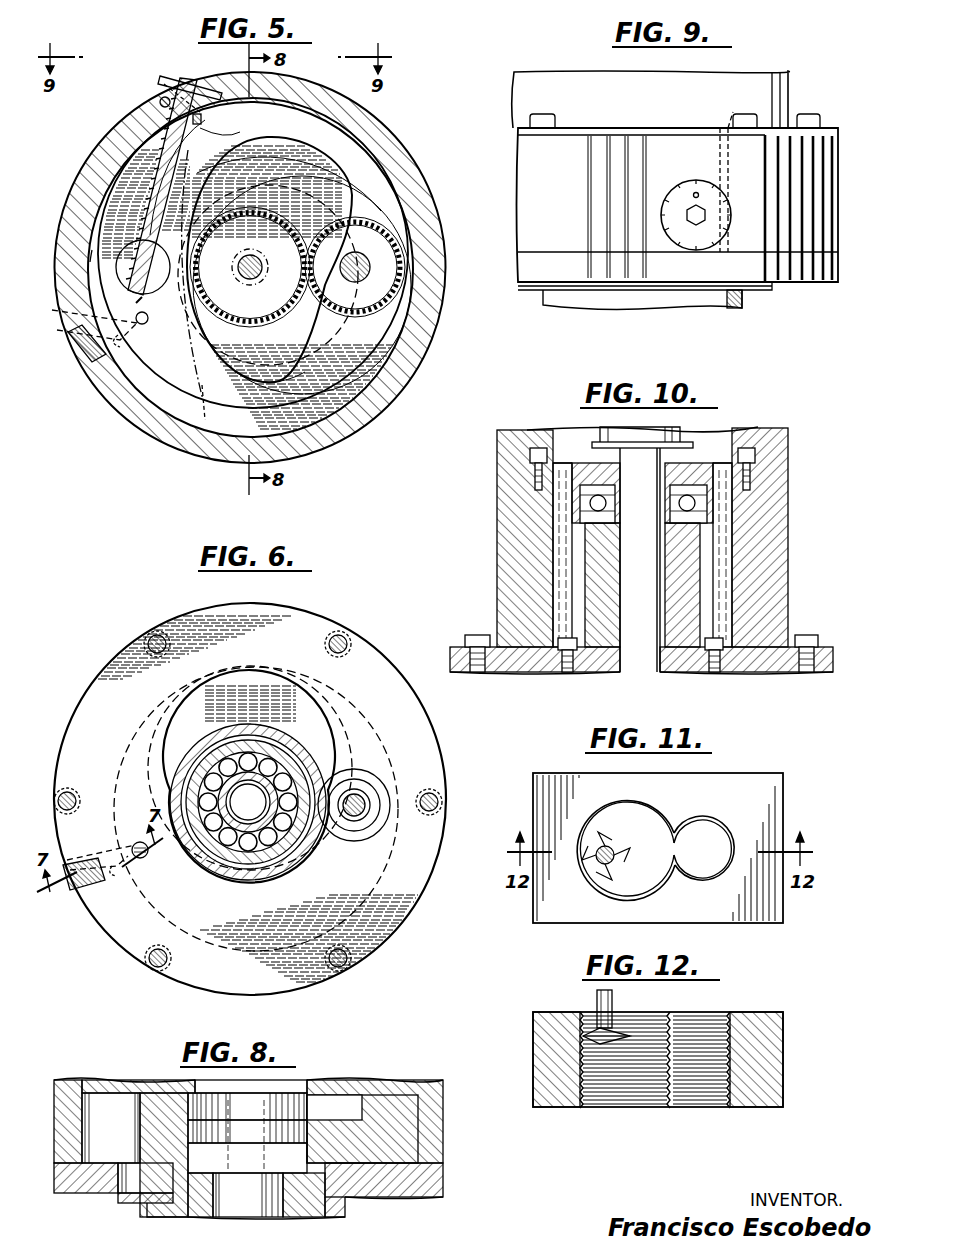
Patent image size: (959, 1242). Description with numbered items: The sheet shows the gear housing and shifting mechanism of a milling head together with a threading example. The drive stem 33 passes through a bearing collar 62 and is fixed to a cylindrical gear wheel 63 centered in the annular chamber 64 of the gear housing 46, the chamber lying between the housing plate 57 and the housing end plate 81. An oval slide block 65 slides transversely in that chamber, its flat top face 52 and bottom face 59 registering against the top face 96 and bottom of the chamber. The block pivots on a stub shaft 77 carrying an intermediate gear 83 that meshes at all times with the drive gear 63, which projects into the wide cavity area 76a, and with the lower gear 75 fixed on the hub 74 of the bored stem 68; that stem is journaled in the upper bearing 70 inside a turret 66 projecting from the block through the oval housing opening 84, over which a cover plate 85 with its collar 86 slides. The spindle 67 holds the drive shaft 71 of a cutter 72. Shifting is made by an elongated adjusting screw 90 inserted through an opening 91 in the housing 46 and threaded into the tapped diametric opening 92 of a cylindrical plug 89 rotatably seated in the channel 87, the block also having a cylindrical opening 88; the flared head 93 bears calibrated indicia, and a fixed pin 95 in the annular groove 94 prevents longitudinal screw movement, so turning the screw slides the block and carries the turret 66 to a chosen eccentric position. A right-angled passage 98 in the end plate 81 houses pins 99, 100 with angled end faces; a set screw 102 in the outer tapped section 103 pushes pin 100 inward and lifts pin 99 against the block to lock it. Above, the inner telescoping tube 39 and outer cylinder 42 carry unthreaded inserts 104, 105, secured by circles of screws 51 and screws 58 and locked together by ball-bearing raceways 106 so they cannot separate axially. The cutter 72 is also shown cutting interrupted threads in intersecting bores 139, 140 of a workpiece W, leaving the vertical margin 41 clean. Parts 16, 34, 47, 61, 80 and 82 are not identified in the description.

In FIG. 5, the rotor chamber 16 is at (312, 364).
In FIG. 5, the drive stem 33 is at (262, 268).
In FIG. 10, the drive stem 33 is at (650, 479).
In FIG. 10, the shaft flange 34 is at (618, 432).
In FIG. 10, the inner telescoping tube 39 is at (760, 428).
In FIG. 11, the vertical margin 41 is at (670, 845).
In FIG. 12, the vertical margin 41 is at (672, 1012).
In FIG. 9, the outer cylinder 42 is at (644, 103).
In FIG. 10, the outer cylinder 42 is at (788, 510).
In FIG. 5, the gear housing 46 is at (382, 404).
In FIG. 8, the gear housing 46 is at (60, 1100).
In FIG. 9, the gear housing 46 is at (560, 203).
In FIG. 10, the gear housing 46 is at (452, 655).
In FIG. 9, the bolt 47 is at (550, 113).
In FIG. 10, the bolt 47 is at (472, 636).
In FIG. 10, the screws 51 is at (550, 449).
In FIG. 5, the flat top face 52 is at (341, 196).
In FIG. 8, the flat top face 52 is at (162, 1080).
In FIG. 10, the housing plate 57 is at (580, 673).
In FIG. 10, the screws 58 is at (580, 636).
In FIG. 8, the bottom face 59 is at (388, 1198).
In FIG. 10, the bearing block 61 is at (568, 478).
In FIG. 8, the bearing collar 62 is at (290, 1085).
In FIG. 5, the cylindrical gear wheel 63 is at (283, 243).
In FIG. 8, the cylindrical gear wheel 63 is at (261, 1108).
In FIG. 5, the annular chamber 64 is at (125, 212).
In FIG. 8, the annular chamber 64 is at (126, 1111).
In FIG. 5, the slide block 65 is at (300, 190).
In FIG. 8, the slide block 65 is at (148, 1128).
In FIG. 6, the turret 66 is at (262, 880).
In FIG. 8, the turret 66 is at (294, 1218).
In FIG. 6, the spindle 67 is at (280, 760).
In FIG. 6, the bored stem 68 is at (268, 804).
In FIG. 6, the upper bearing 70 is at (296, 850).
In FIG. 8, the upper bearing 70 is at (261, 1160).
In FIG. 12, the drive shaft 71 is at (614, 996).
In FIG. 11, the cutter 72 is at (615, 848).
In FIG. 12, the cutter 72 is at (578, 1044).
In FIG. 8, the hub 74 is at (240, 1218).
In FIG. 8, the cylindrical gear 75 is at (261, 1133).
In FIG. 8, the cavity area 76a is at (334, 1107).
In FIG. 5, the stub shaft 77 is at (360, 272).
In FIG. 6, the stub shaft 77 is at (360, 790).
In FIG. 6, the bushing 80 is at (380, 835).
In FIG. 5, the housing end plate 81 is at (92, 250).
In FIG. 6, the housing end plate 81 is at (58, 716).
In FIG. 8, the housing end plate 81 is at (97, 1193).
In FIG. 9, the housing end plate 81 is at (835, 272).
In FIG. 6, the screw 82 is at (160, 636).
In FIG. 5, the intermediate gear 83 is at (382, 243).
In FIG. 5, the housing opening 84 is at (283, 145).
In FIG. 6, the housing opening 84 is at (302, 698).
In FIG. 8, the housing opening 84 is at (158, 1180).
In FIG. 6, the cover plate 85 is at (316, 707).
In FIG. 8, the collar 86 is at (152, 1210).
In FIG. 9, the collar 86 is at (742, 298).
In FIG. 5, the channel 87 is at (200, 385).
In FIG. 5, the cylindrical opening 88 is at (142, 297).
In FIG. 5, the cylindrical plug 89 is at (152, 267).
In FIG. 5, the adjusting screw 90 is at (156, 178).
In FIG. 5, the opening 91 is at (203, 118).
In FIG. 8, the opening 91 is at (124, 1162).
In FIG. 5, the tapped diametric opening 92 is at (188, 228).
In FIG. 5, the flared head 93 is at (187, 74).
In FIG. 9, the flared head 93 is at (692, 184).
In FIG. 5, the annular groove 94 is at (240, 128).
In FIG. 5, the fixed pin 95 is at (163, 98).
In FIG. 9, the fixed pin 95 is at (730, 113).
In FIG. 8, the top face 96 is at (112, 1093).
In FIG. 5, the right-angled passage 98 is at (120, 344).
In FIG. 6, the right-angled passage 98 is at (116, 876).
In FIG. 5, the pin 99 is at (149, 320).
In FIG. 6, the pin 99 is at (142, 858).
In FIG. 5, the pin 100 is at (52, 310).
In FIG. 6, the pin 100 is at (126, 846).
In FIG. 5, the set screw 102 is at (70, 360).
In FIG. 6, the set screw 102 is at (82, 892).
In FIG. 5, the outer tapped section 103 is at (57, 330).
In FIG. 6, the outer tapped section 103 is at (85, 850).
In FIG. 10, the unthreaded insert 104 is at (672, 463).
In FIG. 10, the unthreaded insert 105 is at (700, 570).
In FIG. 10, the ball-bearing raceways 106 is at (706, 525).
In FIG. 11, the bore 139 is at (636, 815).
In FIG. 12, the bore 139 is at (607, 1107).
In FIG. 11, the bore 140 is at (706, 818).
In FIG. 12, the bore 140 is at (693, 1107).
In FIG. 11, the workpiece W is at (774, 800).
In FIG. 12, the workpiece W is at (748, 1012).